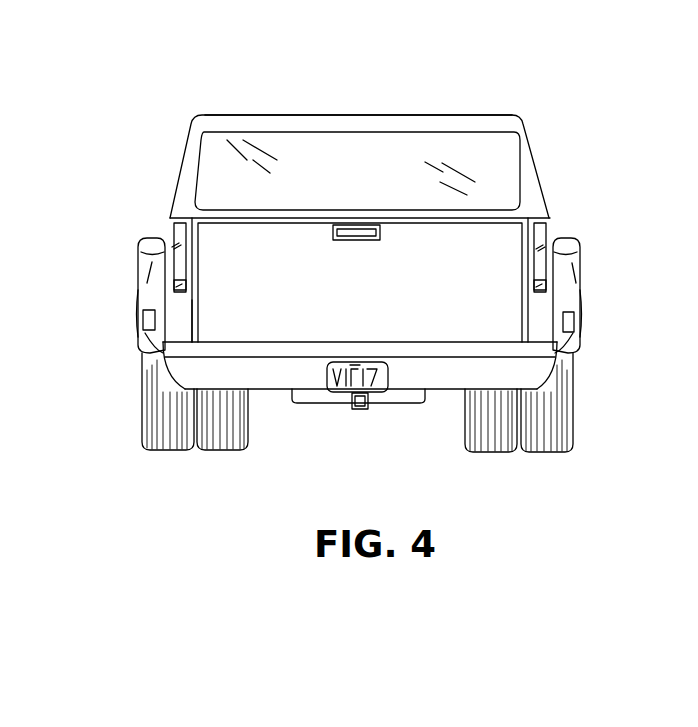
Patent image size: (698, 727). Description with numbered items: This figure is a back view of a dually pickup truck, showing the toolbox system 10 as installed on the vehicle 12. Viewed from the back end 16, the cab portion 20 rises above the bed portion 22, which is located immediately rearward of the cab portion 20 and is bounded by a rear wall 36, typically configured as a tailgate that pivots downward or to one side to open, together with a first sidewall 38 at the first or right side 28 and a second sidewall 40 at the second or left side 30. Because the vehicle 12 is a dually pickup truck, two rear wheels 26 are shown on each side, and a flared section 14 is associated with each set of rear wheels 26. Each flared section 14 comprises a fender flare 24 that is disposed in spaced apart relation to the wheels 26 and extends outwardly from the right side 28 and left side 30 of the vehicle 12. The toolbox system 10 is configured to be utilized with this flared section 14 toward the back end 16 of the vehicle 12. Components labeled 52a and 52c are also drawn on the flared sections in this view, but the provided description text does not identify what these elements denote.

The toolbox system 10 is at (362, 253).
The vehicle 12 is at (347, 127).
The flared section 14 is at (577, 270).
The back end 16 is at (302, 427).
The cab portion 20 is at (394, 113).
The bed portion 22 is at (486, 212).
The fender flare 24 is at (153, 267).
The wheels 26 is at (151, 438).
The first or right side 28 is at (593, 369).
The second or left side 30 is at (113, 351).
The rear wall 36 is at (443, 313).
The first sidewall 38 is at (540, 310).
The second sidewall 40 is at (183, 322).
The upper lens 52a is at (153, 237).
The side lens 52c is at (144, 320).